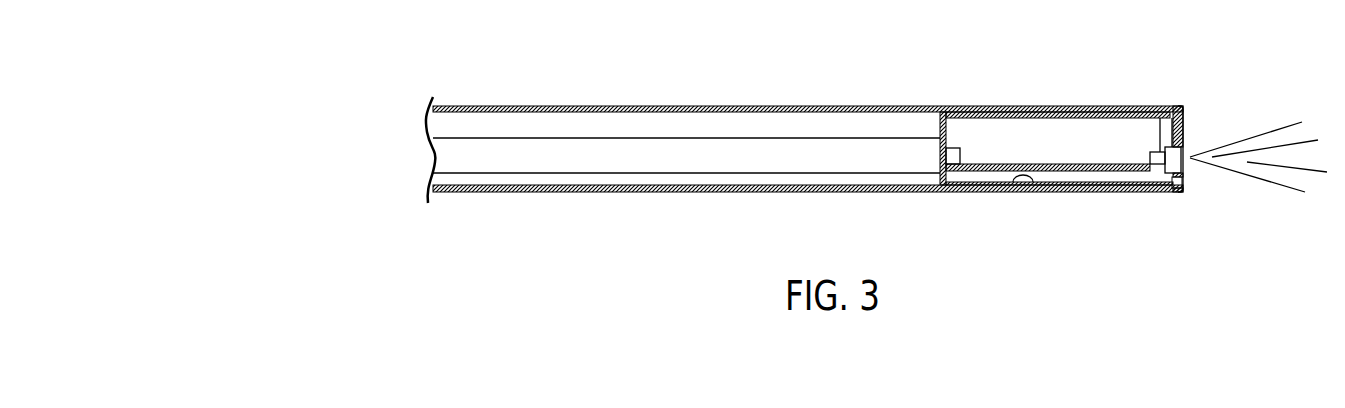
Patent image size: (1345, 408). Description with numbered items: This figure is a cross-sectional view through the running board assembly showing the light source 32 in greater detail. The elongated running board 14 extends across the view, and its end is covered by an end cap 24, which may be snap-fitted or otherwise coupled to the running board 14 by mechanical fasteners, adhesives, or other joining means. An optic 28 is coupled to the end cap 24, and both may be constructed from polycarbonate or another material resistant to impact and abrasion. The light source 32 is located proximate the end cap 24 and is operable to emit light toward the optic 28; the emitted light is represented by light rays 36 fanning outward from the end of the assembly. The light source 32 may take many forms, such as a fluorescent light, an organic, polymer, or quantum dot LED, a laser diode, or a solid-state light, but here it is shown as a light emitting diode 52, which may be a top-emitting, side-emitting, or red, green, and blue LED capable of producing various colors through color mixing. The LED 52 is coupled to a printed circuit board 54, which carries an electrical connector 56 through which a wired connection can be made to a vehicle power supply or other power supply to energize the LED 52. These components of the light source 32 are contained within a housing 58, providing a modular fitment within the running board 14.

The running board 14 is at (663, 188).
The end cap 24 is at (1186, 178).
The optic 28 is at (1178, 148).
The light source 32 is at (1088, 101).
The light rays 36 is at (1278, 186).
The light emitting diode (LED) 52 is at (1160, 106).
The printed circuit board (PCB) 54 is at (1088, 171).
The electrical connector 56 is at (953, 155).
The housing 58 is at (1018, 181).